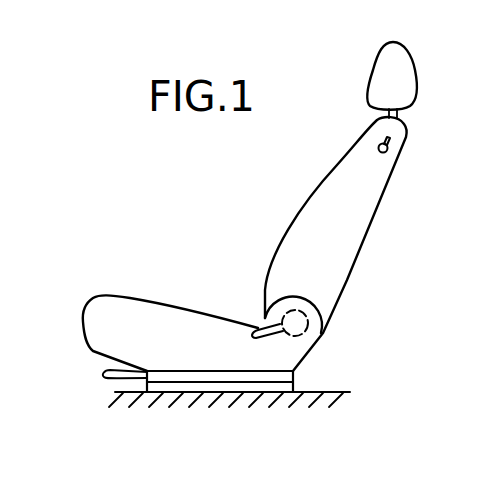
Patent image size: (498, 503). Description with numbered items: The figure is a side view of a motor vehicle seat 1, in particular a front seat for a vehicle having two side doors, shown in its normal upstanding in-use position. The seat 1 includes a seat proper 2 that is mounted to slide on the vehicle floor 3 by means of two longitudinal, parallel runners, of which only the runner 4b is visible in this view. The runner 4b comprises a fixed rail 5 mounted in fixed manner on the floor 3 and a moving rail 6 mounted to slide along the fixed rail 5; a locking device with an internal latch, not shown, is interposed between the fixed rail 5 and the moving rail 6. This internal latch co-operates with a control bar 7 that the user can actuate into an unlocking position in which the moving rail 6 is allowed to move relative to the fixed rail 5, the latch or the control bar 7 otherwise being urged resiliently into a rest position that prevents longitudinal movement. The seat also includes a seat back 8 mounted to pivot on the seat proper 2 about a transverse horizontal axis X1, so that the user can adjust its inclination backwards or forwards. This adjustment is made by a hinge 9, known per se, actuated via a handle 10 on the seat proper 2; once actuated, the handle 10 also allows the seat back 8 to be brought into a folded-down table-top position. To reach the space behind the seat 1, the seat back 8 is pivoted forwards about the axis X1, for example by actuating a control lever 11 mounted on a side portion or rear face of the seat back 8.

The motor vehicle seat 1 is at (250, 277).
The seat proper 2 is at (143, 313).
The vehicle floor 3 is at (122, 396).
The runner 4b is at (337, 381).
The fixed rail 5 is at (265, 385).
The moving rail 6 is at (202, 378).
The control bar 7 is at (108, 375).
The seat back 8 is at (350, 188).
The hinge 9 is at (310, 322).
The handle 10 is at (257, 323).
The control lever 11 is at (392, 141).
The transverse horizontal axis X1 is at (297, 324).